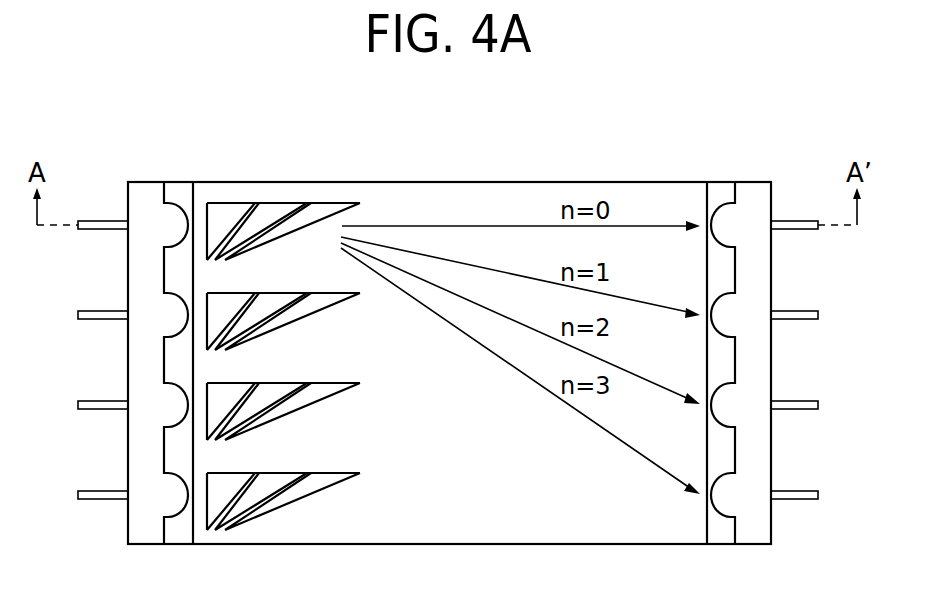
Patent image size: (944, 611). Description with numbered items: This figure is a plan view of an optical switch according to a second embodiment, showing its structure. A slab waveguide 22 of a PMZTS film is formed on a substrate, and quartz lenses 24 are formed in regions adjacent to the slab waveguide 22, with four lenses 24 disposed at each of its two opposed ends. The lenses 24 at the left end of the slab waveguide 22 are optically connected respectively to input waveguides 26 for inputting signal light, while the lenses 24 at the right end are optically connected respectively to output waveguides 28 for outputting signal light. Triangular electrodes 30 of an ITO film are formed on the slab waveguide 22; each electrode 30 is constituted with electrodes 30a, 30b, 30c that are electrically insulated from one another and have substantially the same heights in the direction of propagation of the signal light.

The slab waveguide 22 is at (503, 181).
The lenses 24 is at (146, 181).
The input waveguides 26 is at (101, 220).
The output waveguides 28 is at (796, 220).
The triangular electrodes 30 is at (284, 309).
The electrode 30a is at (220, 202).
The electrode 30b is at (278, 202).
The electrode 30c is at (297, 334).